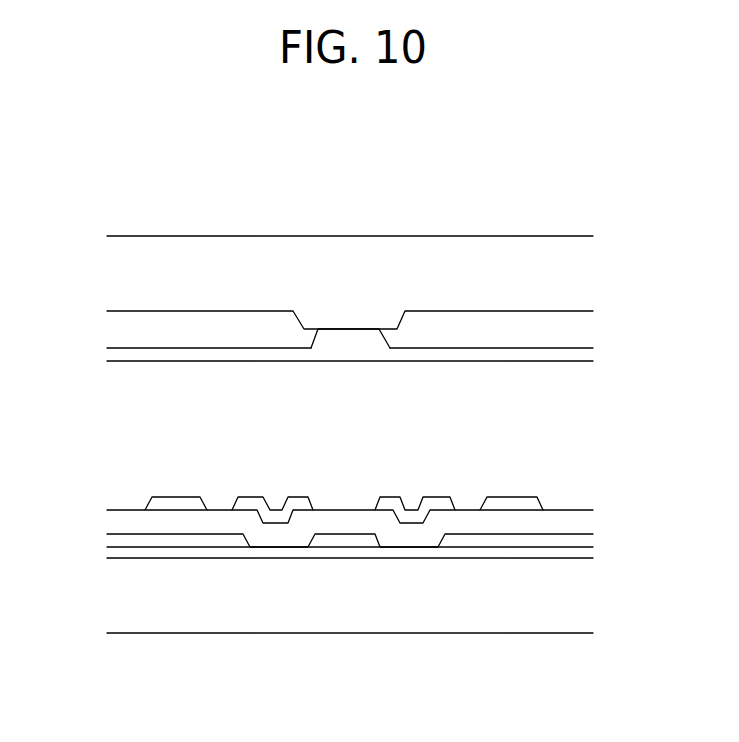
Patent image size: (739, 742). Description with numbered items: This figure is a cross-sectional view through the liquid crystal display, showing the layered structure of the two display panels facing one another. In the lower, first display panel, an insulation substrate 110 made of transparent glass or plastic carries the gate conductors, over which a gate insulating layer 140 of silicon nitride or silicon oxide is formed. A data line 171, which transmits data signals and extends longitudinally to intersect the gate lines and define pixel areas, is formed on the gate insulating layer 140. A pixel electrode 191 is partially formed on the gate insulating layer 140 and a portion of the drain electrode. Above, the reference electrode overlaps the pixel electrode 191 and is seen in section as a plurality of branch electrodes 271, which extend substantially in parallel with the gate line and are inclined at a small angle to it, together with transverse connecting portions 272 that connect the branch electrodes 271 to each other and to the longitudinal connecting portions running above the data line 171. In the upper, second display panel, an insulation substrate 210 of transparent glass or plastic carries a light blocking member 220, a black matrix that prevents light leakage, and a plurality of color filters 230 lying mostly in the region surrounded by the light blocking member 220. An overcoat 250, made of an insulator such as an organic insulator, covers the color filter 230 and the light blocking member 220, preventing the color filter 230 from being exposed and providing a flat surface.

The insulation substrate 110 is at (263, 610).
The gate insulating layer 140 is at (557, 553).
The data line 171 is at (347, 542).
The pixel electrode 191 is at (198, 538).
The insulation substrate 210 is at (266, 267).
The light blocking member 220 is at (352, 322).
The color filter 230 is at (183, 326).
The overcoat 250 is at (459, 350).
The branch electrode 271 is at (175, 505).
The transverse connecting portion 272 is at (296, 502).